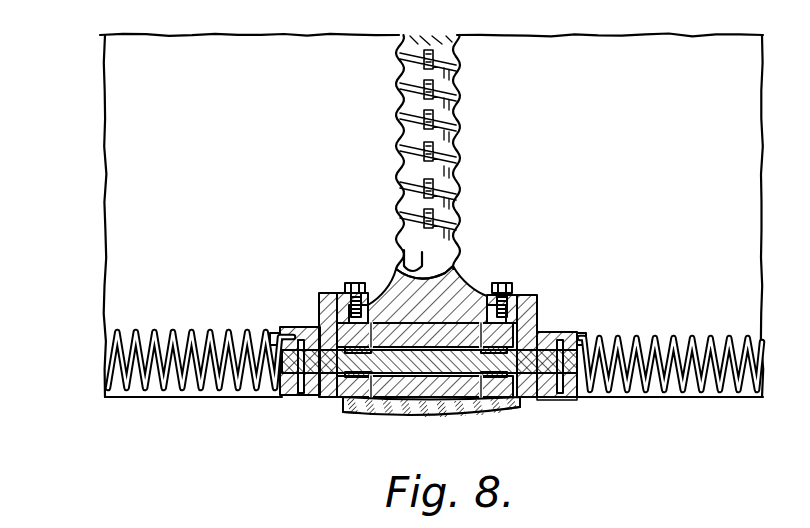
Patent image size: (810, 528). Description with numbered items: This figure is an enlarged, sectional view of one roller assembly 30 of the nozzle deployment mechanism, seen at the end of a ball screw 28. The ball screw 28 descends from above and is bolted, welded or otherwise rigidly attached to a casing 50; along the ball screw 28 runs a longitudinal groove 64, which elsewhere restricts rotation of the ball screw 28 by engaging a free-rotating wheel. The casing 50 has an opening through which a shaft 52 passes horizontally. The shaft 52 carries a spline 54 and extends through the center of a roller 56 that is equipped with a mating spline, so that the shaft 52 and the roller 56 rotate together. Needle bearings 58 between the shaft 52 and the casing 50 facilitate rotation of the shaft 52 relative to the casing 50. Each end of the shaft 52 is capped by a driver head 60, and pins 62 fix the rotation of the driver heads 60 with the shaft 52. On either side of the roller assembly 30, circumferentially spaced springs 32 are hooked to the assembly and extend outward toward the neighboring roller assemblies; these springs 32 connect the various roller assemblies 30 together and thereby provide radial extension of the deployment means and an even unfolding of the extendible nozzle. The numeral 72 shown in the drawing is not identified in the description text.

The ball screw 28 is at (453, 140).
The longitudinal groove 64 is at (453, 73).
The roller assembly 30 is at (481, 240).
The casing 50 is at (510, 297).
The driver heads 60 is at (307, 330).
The pins 62 is at (299, 392).
The spline 54 is at (446, 424).
The roller 56 is at (425, 418).
The ring end 72 is at (378, 415).
The needle bearings 58 is at (498, 412).
The shaft 52 is at (548, 397).
The springs 32 is at (227, 330).